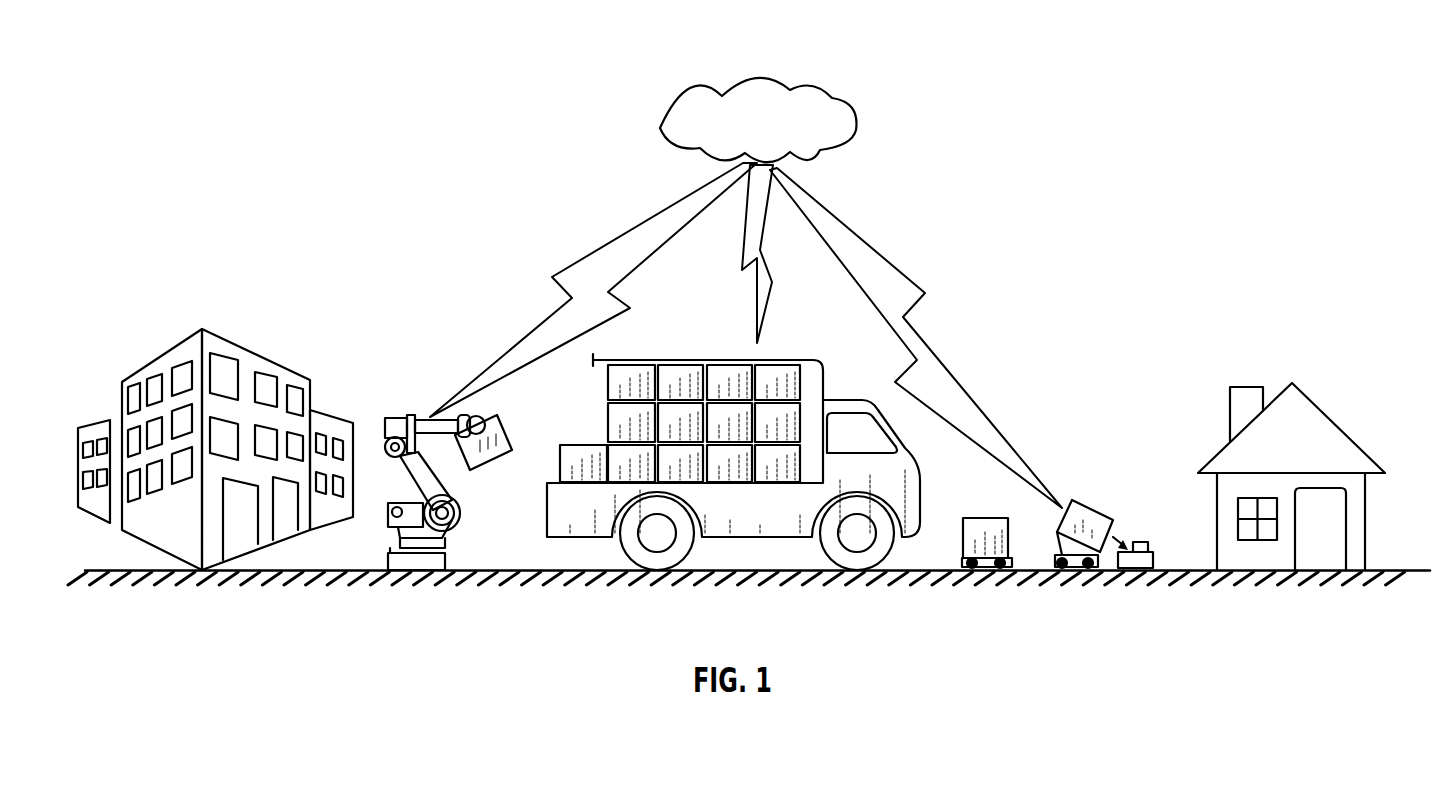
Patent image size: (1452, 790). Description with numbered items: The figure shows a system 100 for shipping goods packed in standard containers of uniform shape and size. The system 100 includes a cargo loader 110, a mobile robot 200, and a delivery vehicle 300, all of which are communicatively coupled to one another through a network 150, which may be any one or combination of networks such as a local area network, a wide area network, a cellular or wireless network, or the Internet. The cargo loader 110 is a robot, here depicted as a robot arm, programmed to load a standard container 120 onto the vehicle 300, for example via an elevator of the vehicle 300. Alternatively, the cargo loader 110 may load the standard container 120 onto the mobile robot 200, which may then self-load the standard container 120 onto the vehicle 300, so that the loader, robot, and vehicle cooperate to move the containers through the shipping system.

The system 100 is at (256, 122).
The cargo loader 110 is at (397, 421).
The standard container 120 is at (490, 465).
The network 150 is at (712, 84).
The mobile robot 200 is at (1057, 555).
The delivery vehicle 300 is at (780, 352).